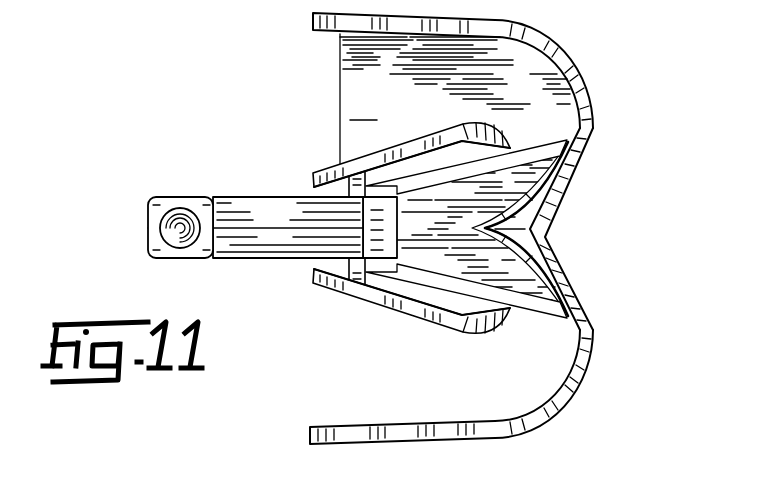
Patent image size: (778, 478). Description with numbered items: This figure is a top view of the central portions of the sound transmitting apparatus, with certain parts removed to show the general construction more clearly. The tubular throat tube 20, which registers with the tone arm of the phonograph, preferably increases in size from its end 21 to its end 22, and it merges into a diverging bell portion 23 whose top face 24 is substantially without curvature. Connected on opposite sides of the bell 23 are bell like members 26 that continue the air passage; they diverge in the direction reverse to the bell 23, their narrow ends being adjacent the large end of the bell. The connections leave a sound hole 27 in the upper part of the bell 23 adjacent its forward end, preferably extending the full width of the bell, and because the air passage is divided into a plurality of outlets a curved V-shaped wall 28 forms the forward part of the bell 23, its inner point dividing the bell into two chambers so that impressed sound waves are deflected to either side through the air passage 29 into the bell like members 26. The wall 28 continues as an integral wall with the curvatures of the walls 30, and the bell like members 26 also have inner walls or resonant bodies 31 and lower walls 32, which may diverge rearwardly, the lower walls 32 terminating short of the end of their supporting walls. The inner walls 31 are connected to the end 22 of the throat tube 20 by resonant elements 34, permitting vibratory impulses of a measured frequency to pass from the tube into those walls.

The throat tube 20 is at (274, 238).
The end of throat 21 is at (162, 250).
The end of throat tube 22 is at (357, 213).
The bell portion 23 is at (572, 156).
The top face of bell 24 is at (530, 278).
The bell like members 26 is at (565, 90).
The sound hole 27 is at (572, 147).
The curved V-shaped wall 28 is at (540, 236).
The air passage 29 is at (180, 226).
The walls of bell like members 30 is at (337, 31).
The inner walls or resonant bodies 31 is at (406, 144).
The lower wall 32 is at (362, 100).
The resonant element 34 is at (338, 165).